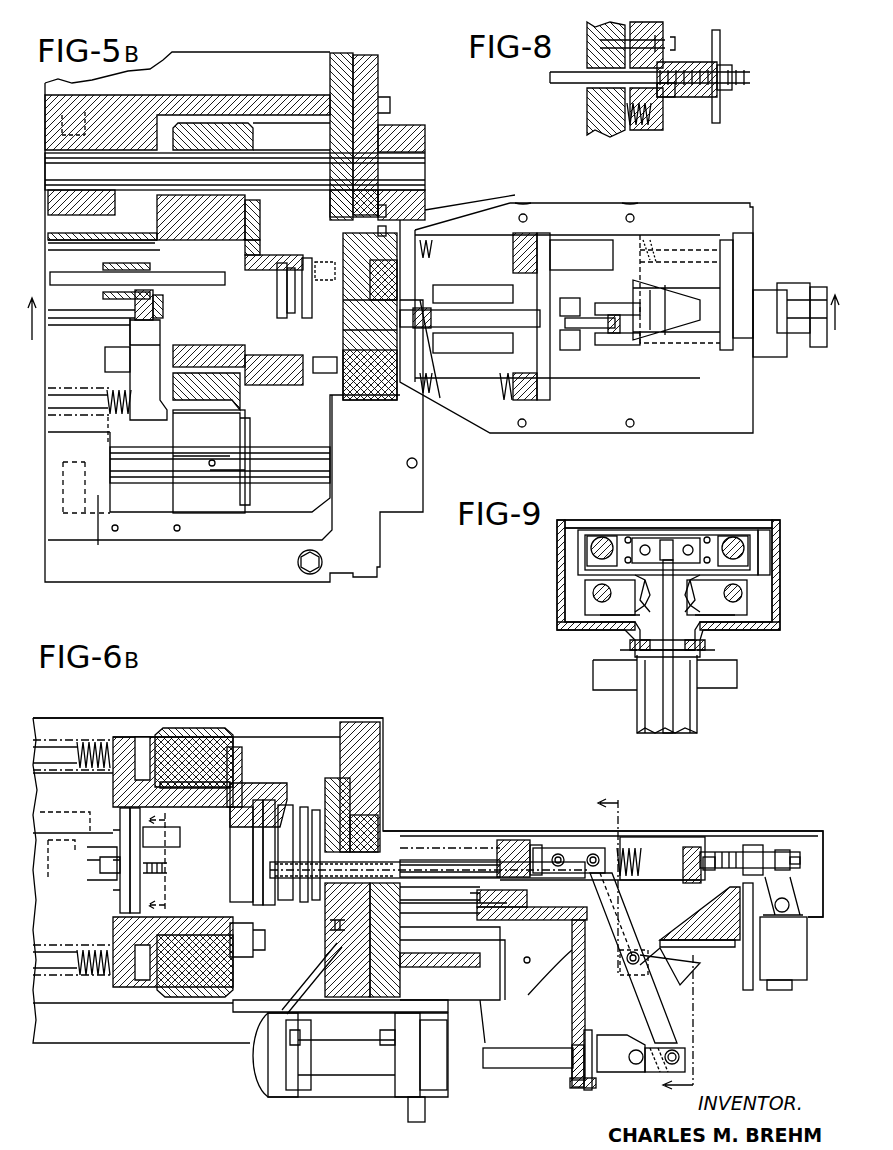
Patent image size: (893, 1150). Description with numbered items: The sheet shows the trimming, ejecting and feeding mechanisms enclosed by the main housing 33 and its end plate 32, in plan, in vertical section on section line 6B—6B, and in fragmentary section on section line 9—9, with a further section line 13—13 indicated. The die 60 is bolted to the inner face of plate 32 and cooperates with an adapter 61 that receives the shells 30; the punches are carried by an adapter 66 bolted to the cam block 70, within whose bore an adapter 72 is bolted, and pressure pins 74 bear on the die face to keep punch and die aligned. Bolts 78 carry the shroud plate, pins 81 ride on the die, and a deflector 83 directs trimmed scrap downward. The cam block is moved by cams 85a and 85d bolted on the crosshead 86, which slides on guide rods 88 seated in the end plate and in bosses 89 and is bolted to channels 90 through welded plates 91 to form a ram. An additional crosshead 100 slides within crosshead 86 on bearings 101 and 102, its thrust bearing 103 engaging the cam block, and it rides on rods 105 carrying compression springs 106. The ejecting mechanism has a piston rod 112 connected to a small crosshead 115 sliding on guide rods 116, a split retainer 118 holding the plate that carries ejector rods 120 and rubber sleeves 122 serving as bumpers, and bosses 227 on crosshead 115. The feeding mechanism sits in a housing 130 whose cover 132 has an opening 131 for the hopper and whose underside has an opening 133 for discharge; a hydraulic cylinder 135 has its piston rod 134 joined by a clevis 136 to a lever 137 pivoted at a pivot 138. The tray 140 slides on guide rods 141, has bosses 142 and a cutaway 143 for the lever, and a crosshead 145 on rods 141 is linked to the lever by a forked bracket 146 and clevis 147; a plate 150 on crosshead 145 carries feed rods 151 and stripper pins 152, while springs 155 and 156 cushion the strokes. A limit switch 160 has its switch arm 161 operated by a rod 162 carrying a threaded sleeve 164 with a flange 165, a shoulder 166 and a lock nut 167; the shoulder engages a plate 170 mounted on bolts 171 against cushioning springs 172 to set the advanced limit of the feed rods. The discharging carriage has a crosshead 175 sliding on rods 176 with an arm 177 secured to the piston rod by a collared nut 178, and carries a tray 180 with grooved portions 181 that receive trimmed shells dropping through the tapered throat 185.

In FIG. 6B, the section line 9— 9 is at (654, 938).
In FIG. 6B, the section line 13- 13 is at (171, 861).
In FIG. 5B, the section line 6b—6b 6B is at (434, 328).
In FIG. 6B, the shells 30 is at (410, 862).
In FIG. 5B, the end plate 32 is at (378, 85).
In FIG. 6B, the end plate 32 is at (365, 718).
In FIG. 5B, the main housing 33 is at (326, 52).
In FIG. 6B, the main housing 33 is at (303, 718).
In FIG. 5B, the die 60 is at (357, 240).
In FIG. 6B, the die 60 is at (340, 790).
In FIG. 5B, the adapter 61 is at (362, 380).
In FIG. 6B, the adapter 61 is at (365, 825).
In FIG. 6B, the adapter 66 is at (285, 805).
In FIG. 5B, the cam block 70 is at (276, 385).
In FIG. 6B, the cam block 70 is at (258, 800).
In FIG. 6B, the adapter 72 is at (232, 885).
In FIG. 5B, the pressure pins 74 is at (305, 262).
In FIG. 6B, the pressure pins 74 is at (312, 807).
In FIG. 6B, the bolts 78 is at (262, 935).
In FIG. 5B, the pins 81 is at (280, 263).
In FIG. 6B, the deflector 83 is at (280, 1010).
In FIG. 6B, the cam 85a is at (238, 747).
In FIG. 5B, the cam 85d is at (256, 215).
In FIG. 6B, the cam 85d is at (215, 995).
In FIG. 5B, the crosshead 86 is at (212, 125).
In FIG. 6B, the crosshead 86 is at (195, 728).
In FIG. 5B, the guide rods 88 is at (415, 165).
In FIG. 5B, the bosses 89 is at (100, 145).
In FIG. 6B, the bosses 89 is at (55, 820).
In FIG. 5B, the channels 90 is at (68, 245).
In FIG. 5B, the plates 91 is at (170, 195).
In FIG. 5B, the additional crosshead 100 is at (145, 410).
In FIG. 6B, the additional crosshead 100 is at (130, 987).
In FIG. 5B, the bearing 101 is at (226, 405).
In FIG. 6B, the bearing 102 is at (200, 782).
In FIG. 5B, the thrust bearing 103 is at (225, 292).
In FIG. 6B, the thrust bearing 103 is at (228, 800).
In FIG. 5B, the rods 105 is at (66, 405).
In FIG. 6B, the rods 105 is at (55, 745).
In FIG. 5B, the compression spring 106 is at (106, 418).
In FIG. 6B, the compression spring 106 is at (88, 742).
In FIG. 5B, the piston rod 112 is at (87, 318).
In FIG. 6B, the piston rod 112 is at (60, 858).
In FIG. 6B, the small crosshead 115 is at (118, 900).
In FIG. 5B, the guide rods 116 is at (62, 330).
In FIG. 6B, the split retainer 118 is at (140, 890).
In FIG. 5B, the ejector rods 120 is at (195, 345).
In FIG. 6B, the sleeve 122 is at (175, 840).
In FIG. 9, the housing 130 is at (557, 553).
In FIG. 6B, the housing 130 is at (492, 836).
In FIG. 6B, the opening 131 is at (452, 848).
In FIG. 9, the cover 132 is at (578, 520).
In FIG. 6B, the cover 132 is at (640, 837).
In FIG. 9, the opening 133 is at (690, 698).
In FIG. 6B, the opening 133 is at (492, 990).
In FIG. 6B, the piston rod 134 is at (508, 1068).
In FIG. 6B, the hydraulic cylinder 135 is at (335, 1068).
In FIG. 6B, the clevis 136 is at (650, 1072).
In FIG. 9, the lever 137 is at (663, 718).
In FIG. 6B, the lever 137 is at (655, 995).
In FIG. 6B, the pivot 138 is at (680, 963).
In FIG. 5B, the tray-like member 140 is at (695, 230).
In FIG. 9, the tray-like member 140 is at (770, 557).
In FIG. 6B, the tray-like member 140 is at (695, 847).
In FIG. 5B, the guide rods 141 is at (738, 233).
In FIG. 9, the guide rods 141 is at (603, 536).
In FIG. 6B, the guide rods 141 is at (712, 857).
In FIG. 5B, the bosses 142 is at (522, 233).
In FIG. 5B, the cutaway 143 is at (620, 260).
In FIG. 5B, the crosshead 145 is at (545, 233).
In FIG. 9, the crosshead 145 is at (690, 530).
In FIG. 6B, the crosshead 145 is at (537, 845).
In FIG. 5B, the forked bracket 146 is at (572, 330).
In FIG. 9, the forked bracket 146 is at (645, 538).
In FIG. 6B, the forked bracket 146 is at (558, 848).
In FIG. 5B, the clevis 147 is at (610, 340).
In FIG. 9, the clevis 147 is at (666, 540).
In FIG. 6B, the clevis 147 is at (592, 848).
In FIG. 6B, the plate 150 is at (515, 840).
In FIG. 5B, the feed rods 151 is at (474, 295).
In FIG. 6B, the feed rods 151 is at (470, 860).
In FIG. 6B, the stripper pins 152 is at (470, 907).
In FIG. 5B, the springs 155 is at (432, 240).
In FIG. 5B, the springs 156 is at (660, 235).
In FIG. 6B, the springs 156 is at (650, 848).
In FIG. 6B, the limit switch 160 is at (795, 980).
In FIG. 6B, the switch arm 161 is at (790, 915).
In FIG. 8, the rod 162 is at (565, 83).
In FIG. 6B, the rod 162 is at (740, 852).
In FIG. 8, the sleeve 164 is at (717, 68).
In FIG. 5B, the flange 165 is at (817, 287).
In FIG. 8, the flange 165 is at (720, 115).
In FIG. 6B, the flange 165 is at (765, 845).
In FIG. 8, the shoulder 166 is at (675, 95).
In FIG. 8, the lock nut 167 is at (733, 88).
In FIG. 6B, the lock nut 167 is at (795, 850).
In FIG. 5B, the plate 170 is at (777, 357).
In FIG. 5B, the bolts 171 is at (795, 283).
In FIG. 8, the bolts 171 is at (672, 42).
In FIG. 8, the cushioning springs 172 is at (655, 115).
In FIG. 9, the crosshead 175 is at (745, 610).
In FIG. 6B, the crosshead 175 is at (556, 970).
In FIG. 9, the rods 176 is at (592, 600).
In FIG. 6B, the arm 177 is at (578, 1088).
In FIG. 6B, the collared nut 178 is at (572, 1060).
In FIG. 9, the tray 180 is at (638, 598).
In FIG. 6B, the tray 180 is at (545, 920).
In FIG. 9, the grooved portions 181 is at (700, 605).
In FIG. 6B, the tapered throat 185 is at (415, 967).
In FIG. 5B, the bosses 227 is at (116, 263).